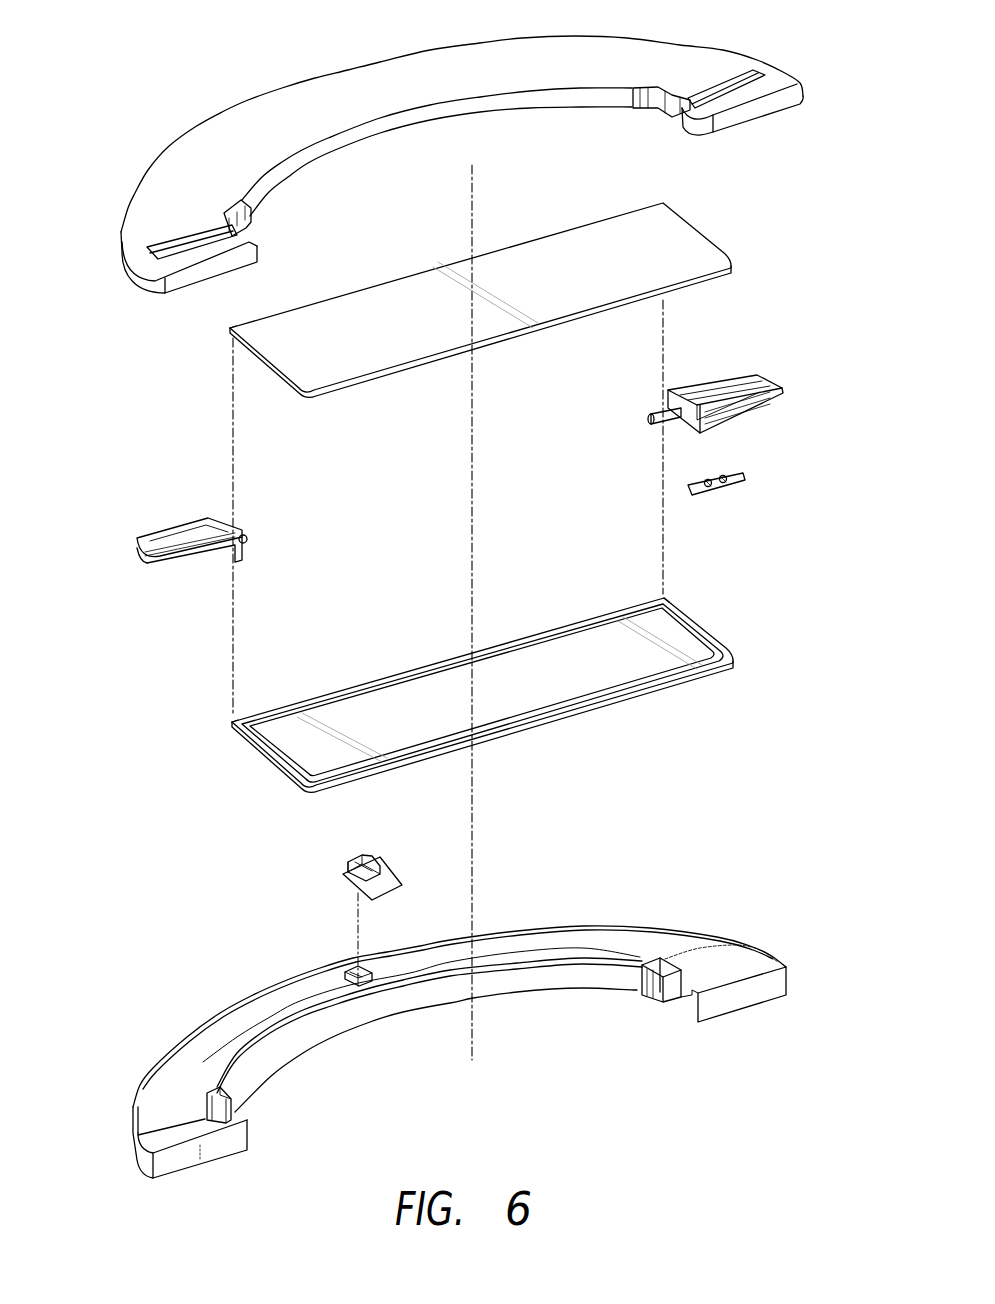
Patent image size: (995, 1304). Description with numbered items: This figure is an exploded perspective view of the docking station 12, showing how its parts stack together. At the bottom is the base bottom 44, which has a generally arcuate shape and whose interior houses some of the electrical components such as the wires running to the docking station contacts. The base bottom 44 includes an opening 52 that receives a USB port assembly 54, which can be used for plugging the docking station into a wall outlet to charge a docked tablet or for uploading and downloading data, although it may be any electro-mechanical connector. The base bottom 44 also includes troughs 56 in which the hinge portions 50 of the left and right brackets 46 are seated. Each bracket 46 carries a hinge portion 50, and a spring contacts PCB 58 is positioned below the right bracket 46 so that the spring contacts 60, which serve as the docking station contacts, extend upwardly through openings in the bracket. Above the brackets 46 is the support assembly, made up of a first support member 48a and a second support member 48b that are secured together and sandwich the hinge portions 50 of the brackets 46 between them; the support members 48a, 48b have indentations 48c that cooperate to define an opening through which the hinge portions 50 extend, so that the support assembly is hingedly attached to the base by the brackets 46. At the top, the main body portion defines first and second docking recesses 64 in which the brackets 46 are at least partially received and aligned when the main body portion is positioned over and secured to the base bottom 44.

The docking station 12 is at (90, 79).
The base bottom 44 is at (717, 935).
The brackets 46 is at (738, 382).
The first support member 48a is at (712, 262).
The second support member 48b is at (690, 657).
The indentations 48c is at (230, 330).
The hinge portion 50 is at (664, 414).
The opening 52 is at (372, 973).
The USB port assembly 54 is at (410, 838).
The troughs 56 is at (660, 992).
The spring contacts PCB 58 is at (738, 475).
The spring contacts 60 is at (723, 478).
The docking recesses 64 is at (252, 217).